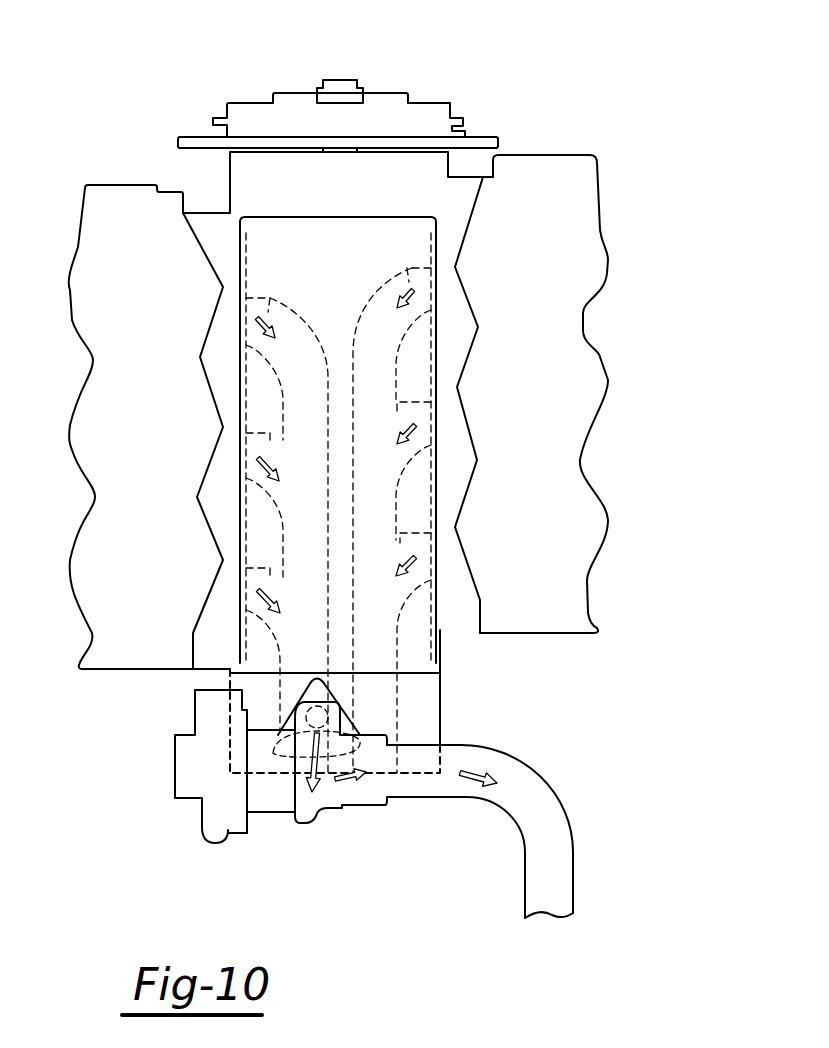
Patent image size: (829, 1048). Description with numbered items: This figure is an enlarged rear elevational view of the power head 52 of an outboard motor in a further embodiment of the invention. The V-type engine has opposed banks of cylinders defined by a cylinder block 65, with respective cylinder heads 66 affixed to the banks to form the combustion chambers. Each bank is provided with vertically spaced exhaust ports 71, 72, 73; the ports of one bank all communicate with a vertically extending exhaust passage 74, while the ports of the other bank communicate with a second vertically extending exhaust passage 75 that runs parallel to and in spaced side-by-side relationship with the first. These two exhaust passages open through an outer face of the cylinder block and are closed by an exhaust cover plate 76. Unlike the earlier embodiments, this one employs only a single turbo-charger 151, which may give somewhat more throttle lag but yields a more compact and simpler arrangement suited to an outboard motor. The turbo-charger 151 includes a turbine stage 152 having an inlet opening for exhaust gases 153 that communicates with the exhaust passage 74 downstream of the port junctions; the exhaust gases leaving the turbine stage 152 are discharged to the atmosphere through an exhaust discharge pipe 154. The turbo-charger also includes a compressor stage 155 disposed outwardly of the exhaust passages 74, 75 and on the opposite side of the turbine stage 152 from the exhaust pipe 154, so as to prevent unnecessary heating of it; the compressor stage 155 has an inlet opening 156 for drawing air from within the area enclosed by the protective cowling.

The power head assembly 52 is at (152, 145).
The cylinder block 65 is at (447, 197).
The cylinder heads 66 is at (560, 183).
The exhaust cover plate 76 is at (420, 228).
The exhaust port 71 is at (253, 308).
The exhaust port 72 is at (260, 448).
The exhaust port 73 is at (257, 582).
The exhaust passage 74 is at (293, 520).
The exhaust passage 75 is at (387, 497).
The turbo-charger 151 is at (366, 799).
The turbine stage 152 is at (330, 797).
The inlet opening for exhaust gases 153 is at (300, 711).
The exhaust discharge pipe 154 is at (528, 787).
The compressor stage 155 is at (208, 825).
The inlet opening 156 is at (175, 758).